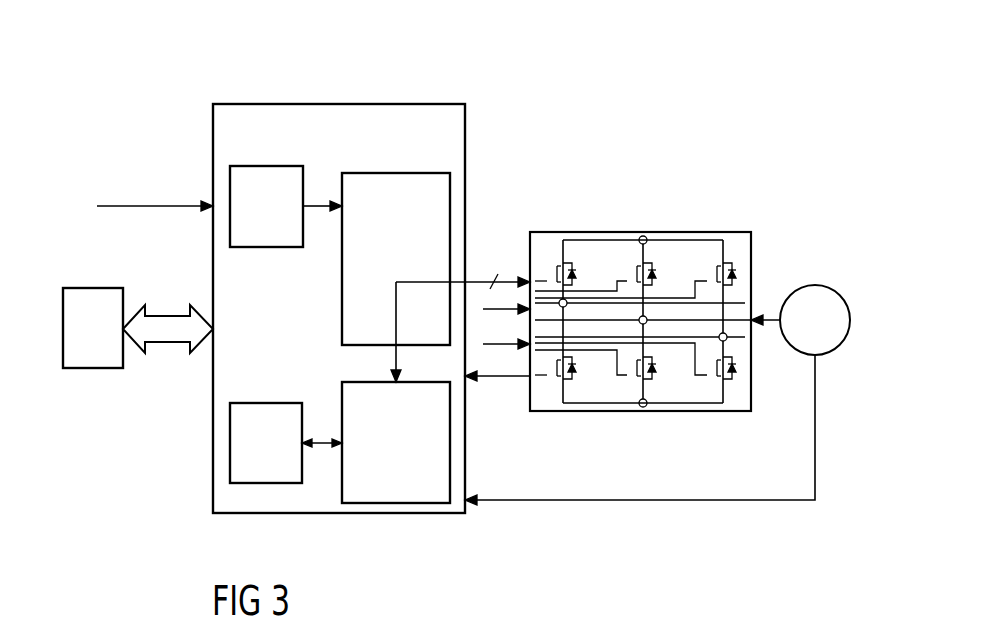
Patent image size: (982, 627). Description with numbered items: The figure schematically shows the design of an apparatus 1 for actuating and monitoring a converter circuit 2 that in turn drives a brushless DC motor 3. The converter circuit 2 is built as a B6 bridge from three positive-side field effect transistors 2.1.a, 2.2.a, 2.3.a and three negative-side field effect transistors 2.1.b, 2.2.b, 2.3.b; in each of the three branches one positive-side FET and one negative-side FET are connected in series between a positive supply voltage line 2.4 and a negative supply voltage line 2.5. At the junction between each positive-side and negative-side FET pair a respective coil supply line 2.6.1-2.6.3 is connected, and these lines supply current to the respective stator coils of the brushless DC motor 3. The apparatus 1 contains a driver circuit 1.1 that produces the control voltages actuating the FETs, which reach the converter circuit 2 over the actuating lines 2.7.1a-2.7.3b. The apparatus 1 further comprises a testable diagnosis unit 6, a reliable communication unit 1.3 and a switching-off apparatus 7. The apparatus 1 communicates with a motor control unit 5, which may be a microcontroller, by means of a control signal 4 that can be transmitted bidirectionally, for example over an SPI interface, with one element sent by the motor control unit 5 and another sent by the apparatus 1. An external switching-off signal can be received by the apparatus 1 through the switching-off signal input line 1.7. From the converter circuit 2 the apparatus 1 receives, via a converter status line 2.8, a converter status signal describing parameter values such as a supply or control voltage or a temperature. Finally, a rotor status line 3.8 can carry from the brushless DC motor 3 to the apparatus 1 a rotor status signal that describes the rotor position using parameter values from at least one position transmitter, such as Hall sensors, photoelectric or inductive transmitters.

The apparatus 1 is at (425, 94).
The driver circuit 1.1 is at (415, 253).
The reliable communication unit 1.3 is at (285, 459).
The switching-off signal input line 1.7 is at (122, 205).
The converter circuit 2 is at (713, 222).
The positive-side field effect transistor 2.1.a is at (572, 260).
The positive-side field effect transistor 2.2.a is at (652, 260).
The positive-side field effect transistor 2.3.a is at (734, 260).
The negative-side field effect transistor 2.1.b is at (572, 382).
The negative-side field effect transistor 2.2.b is at (652, 382).
The negative-side field effect transistor 2.3.b is at (734, 382).
The positive supply voltage line 2.4 is at (612, 240).
The negative supply voltage line 2.5 is at (498, 348).
The coil supply lines 2.6.1-2.6.3 is at (768, 316).
The actuating lines 2.7.1a-2.7.3b is at (497, 276).
The converter status line 2.8 is at (512, 379).
The brushless DC motor 3 is at (823, 331).
The rotor status line 3.8 is at (715, 503).
The control signal 4 is at (177, 345).
The motor control unit 5 is at (101, 343).
The testable diagnosis unit 6 is at (404, 458).
The switching-off apparatus 7 is at (274, 224).